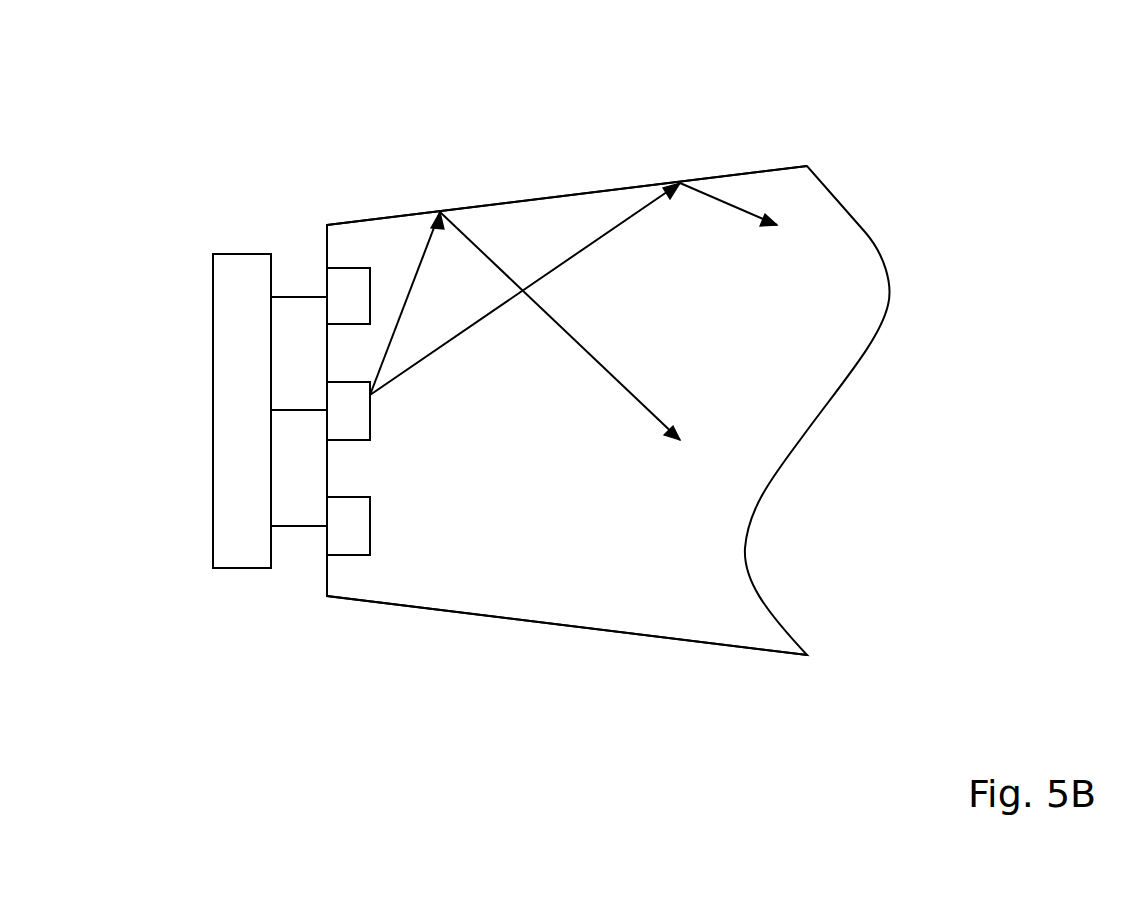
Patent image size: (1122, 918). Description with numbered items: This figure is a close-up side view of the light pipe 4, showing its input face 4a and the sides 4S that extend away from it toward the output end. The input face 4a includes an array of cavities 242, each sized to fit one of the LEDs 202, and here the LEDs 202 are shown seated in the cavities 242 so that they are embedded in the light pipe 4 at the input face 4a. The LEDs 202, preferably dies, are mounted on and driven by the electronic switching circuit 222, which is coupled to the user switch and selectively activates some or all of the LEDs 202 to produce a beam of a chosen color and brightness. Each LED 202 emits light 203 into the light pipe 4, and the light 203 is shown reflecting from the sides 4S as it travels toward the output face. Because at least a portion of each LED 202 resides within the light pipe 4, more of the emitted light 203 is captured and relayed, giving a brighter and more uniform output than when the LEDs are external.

The light pipe 4 is at (657, 348).
The light pipe sides 4S is at (765, 167).
The input face 4a is at (327, 583).
The electronic switching circuit 222 is at (243, 254).
The LEDs 202 is at (350, 268).
The cavities 242 is at (280, 296).
The light 203 is at (610, 225).